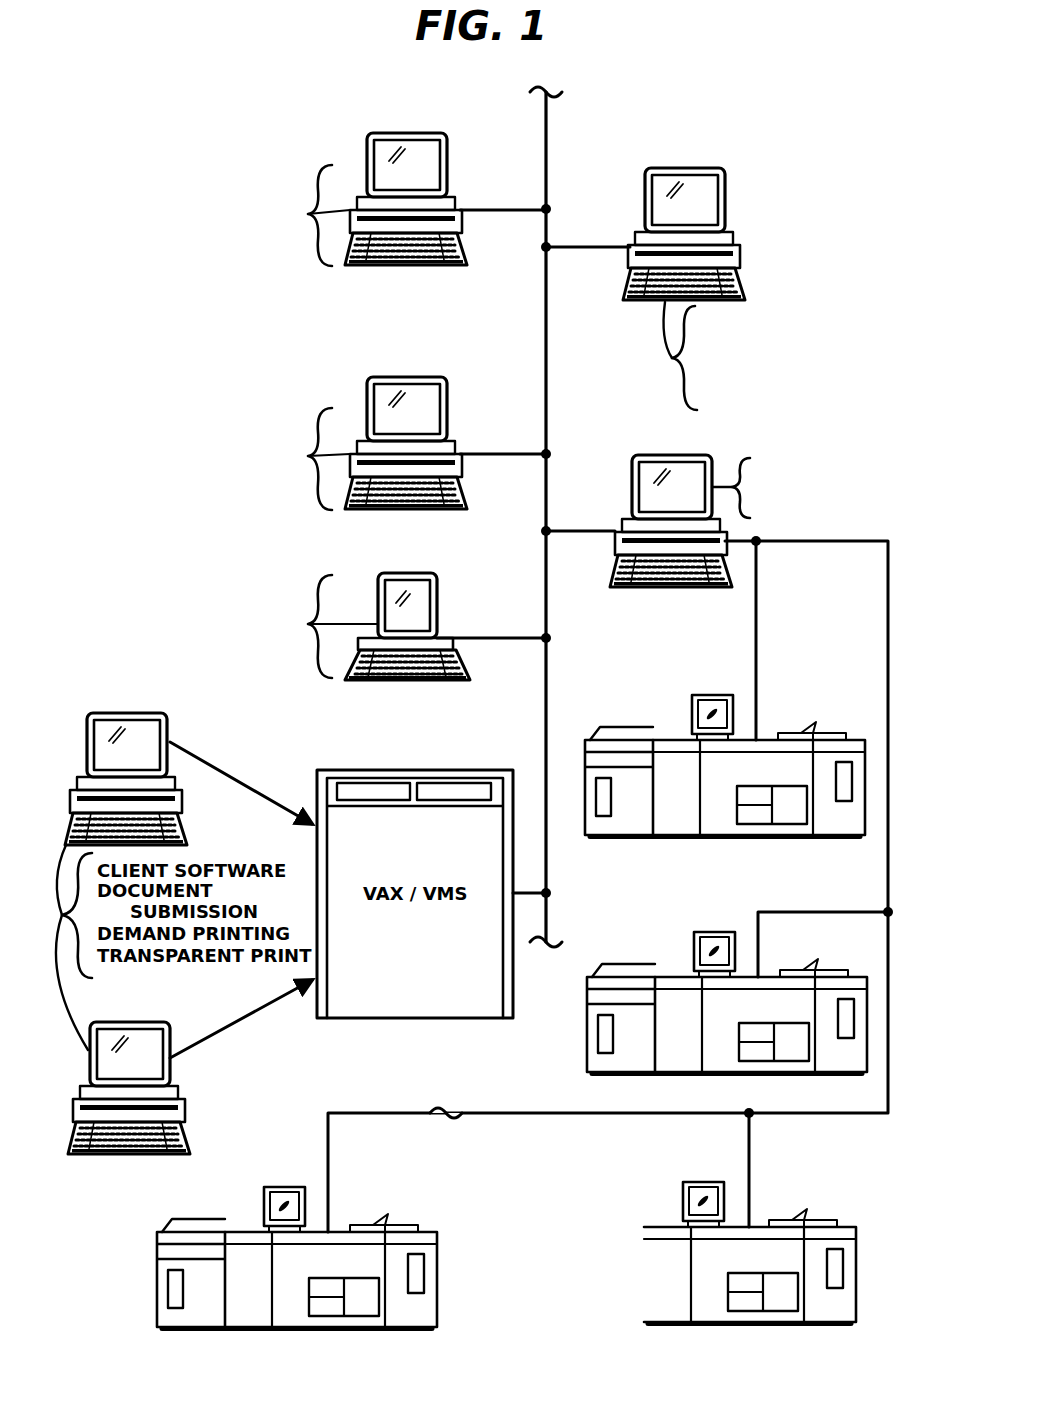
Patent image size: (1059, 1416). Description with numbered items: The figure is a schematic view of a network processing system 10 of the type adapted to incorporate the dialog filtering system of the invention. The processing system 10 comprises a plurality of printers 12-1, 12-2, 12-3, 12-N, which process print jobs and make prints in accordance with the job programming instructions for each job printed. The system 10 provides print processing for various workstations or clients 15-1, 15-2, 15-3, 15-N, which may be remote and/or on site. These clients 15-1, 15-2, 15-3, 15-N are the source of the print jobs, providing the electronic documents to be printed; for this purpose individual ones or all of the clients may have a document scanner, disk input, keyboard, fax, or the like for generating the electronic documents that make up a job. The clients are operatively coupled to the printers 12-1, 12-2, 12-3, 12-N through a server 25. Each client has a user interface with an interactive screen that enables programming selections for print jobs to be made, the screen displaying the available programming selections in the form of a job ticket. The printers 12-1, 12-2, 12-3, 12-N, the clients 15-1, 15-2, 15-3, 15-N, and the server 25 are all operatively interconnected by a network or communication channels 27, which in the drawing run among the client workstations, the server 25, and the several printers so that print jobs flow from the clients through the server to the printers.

The network processing system 10 is at (580, 70).
The printer 12-1 is at (655, 703).
The printer 12-2 is at (655, 943).
The printer 12-3 is at (655, 1187).
The printer 12-N is at (446, 1172).
The client 15-1 is at (287, 205).
The client 15-2 is at (518, 361).
The client 15-3 is at (520, 566).
The client 15-N is at (717, 275).
The server 25 is at (626, 456).
The network or communication channels 27 is at (546, 268).